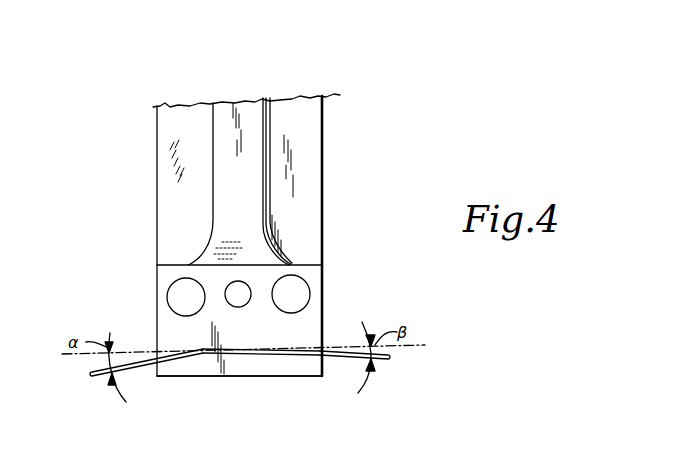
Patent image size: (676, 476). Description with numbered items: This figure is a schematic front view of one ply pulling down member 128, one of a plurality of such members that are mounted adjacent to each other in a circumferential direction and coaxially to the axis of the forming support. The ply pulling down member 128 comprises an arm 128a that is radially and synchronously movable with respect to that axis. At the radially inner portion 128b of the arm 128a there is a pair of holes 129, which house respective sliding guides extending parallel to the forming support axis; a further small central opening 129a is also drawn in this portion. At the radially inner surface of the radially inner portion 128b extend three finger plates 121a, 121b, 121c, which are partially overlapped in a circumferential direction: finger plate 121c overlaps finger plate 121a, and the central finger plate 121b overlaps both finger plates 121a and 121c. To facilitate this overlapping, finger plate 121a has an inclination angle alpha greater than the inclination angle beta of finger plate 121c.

The ply pulling down member 128 is at (323, 83).
The arm 128a is at (250, 177).
The radially inner portion 128b is at (312, 317).
The hole 129 is at (183, 289).
The central opening 129a is at (238, 297).
The finger plate 121a is at (137, 368).
The central finger plate 121b is at (242, 355).
The finger plate 121c is at (337, 360).